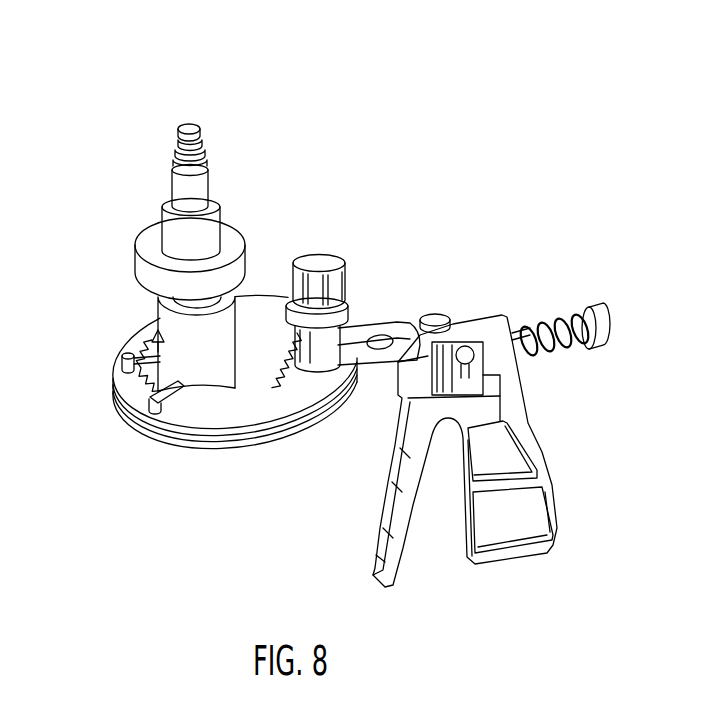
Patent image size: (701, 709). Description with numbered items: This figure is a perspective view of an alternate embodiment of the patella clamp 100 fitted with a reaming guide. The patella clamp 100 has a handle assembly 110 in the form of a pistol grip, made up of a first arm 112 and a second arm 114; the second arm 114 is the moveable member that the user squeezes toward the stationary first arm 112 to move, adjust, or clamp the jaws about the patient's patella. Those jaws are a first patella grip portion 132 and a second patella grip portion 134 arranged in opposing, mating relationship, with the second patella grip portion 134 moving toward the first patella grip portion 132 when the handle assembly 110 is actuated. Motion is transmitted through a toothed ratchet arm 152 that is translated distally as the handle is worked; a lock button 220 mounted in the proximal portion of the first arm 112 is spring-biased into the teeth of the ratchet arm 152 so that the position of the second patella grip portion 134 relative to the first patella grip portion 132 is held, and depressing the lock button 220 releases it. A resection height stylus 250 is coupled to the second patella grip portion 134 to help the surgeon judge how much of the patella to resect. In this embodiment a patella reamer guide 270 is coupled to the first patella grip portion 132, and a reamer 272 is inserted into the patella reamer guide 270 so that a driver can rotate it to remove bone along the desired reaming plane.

The patella clamp 100 is at (378, 121).
The handle assembly 110 is at (598, 505).
The first arm 112 is at (550, 568).
The second arm 114 is at (346, 580).
The first patella grip portion 132 is at (131, 442).
The second patella grip portion 134 is at (253, 310).
The ratchet arm 152 is at (544, 362).
The lock button 220 is at (412, 287).
The resection height stylus 250 is at (314, 255).
The patella reamer guide 270 is at (150, 334).
The reamer 272 is at (146, 157).